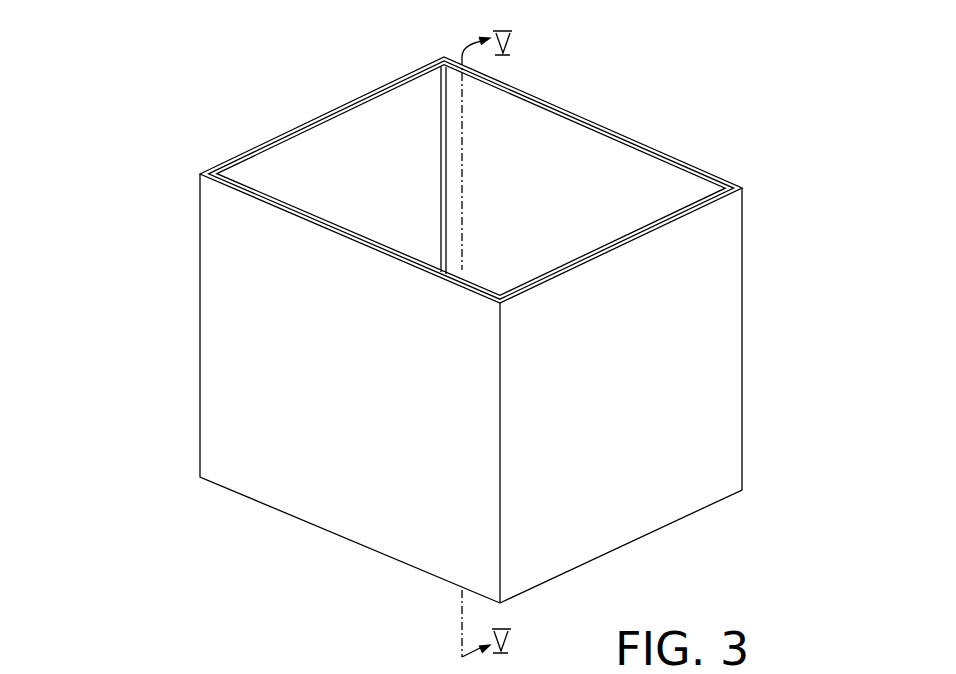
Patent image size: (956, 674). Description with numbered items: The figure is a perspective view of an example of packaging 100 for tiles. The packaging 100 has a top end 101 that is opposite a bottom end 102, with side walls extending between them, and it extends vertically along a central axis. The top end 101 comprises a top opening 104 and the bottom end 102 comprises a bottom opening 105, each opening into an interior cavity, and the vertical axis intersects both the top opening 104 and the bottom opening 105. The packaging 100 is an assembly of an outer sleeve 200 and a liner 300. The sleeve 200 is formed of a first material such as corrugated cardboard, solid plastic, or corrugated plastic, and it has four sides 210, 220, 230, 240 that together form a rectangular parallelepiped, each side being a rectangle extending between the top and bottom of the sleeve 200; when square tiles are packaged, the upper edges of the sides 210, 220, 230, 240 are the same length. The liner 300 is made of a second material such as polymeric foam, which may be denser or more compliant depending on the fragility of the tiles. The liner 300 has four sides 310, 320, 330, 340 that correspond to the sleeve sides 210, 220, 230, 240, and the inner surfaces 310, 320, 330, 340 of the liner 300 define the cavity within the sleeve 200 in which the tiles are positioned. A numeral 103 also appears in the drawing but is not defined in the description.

The packaging 100 is at (722, 72).
The top end 101 is at (617, 130).
The bottom end 102 is at (672, 524).
The third side edge 103 is at (265, 336).
The top opening 104 is at (330, 146).
The bottom opening 105 is at (308, 547).
The outer sleeve 200 is at (716, 285).
The side 210 is at (703, 350).
The side 220 is at (364, 406).
The side 230 is at (312, 123).
The side 240 is at (597, 121).
The liner 300 is at (619, 177).
The side of liner 310 is at (678, 203).
The side of liner 320 is at (263, 187).
The side of liner 330 is at (362, 137).
The side of liner 340 is at (563, 190).